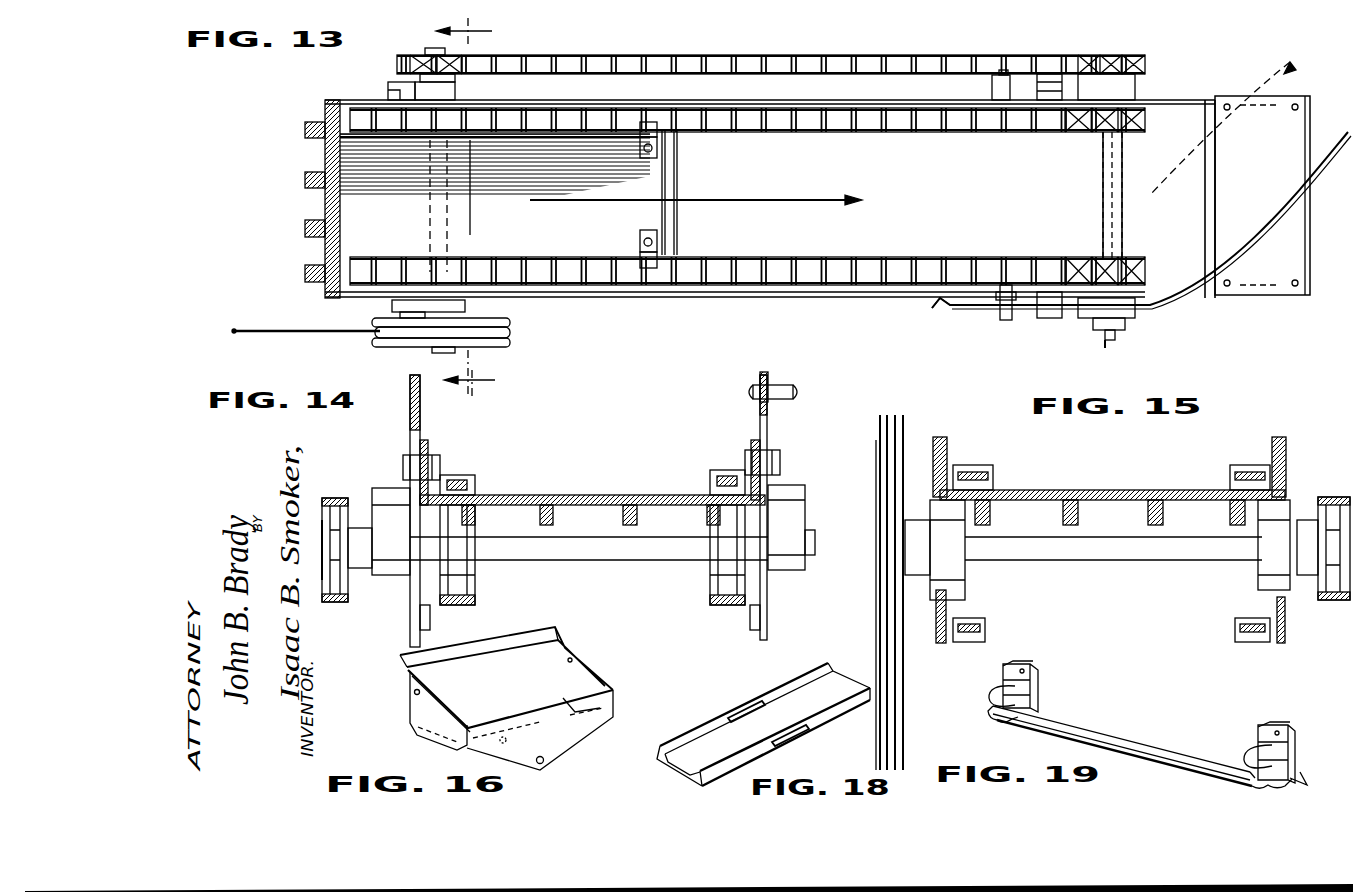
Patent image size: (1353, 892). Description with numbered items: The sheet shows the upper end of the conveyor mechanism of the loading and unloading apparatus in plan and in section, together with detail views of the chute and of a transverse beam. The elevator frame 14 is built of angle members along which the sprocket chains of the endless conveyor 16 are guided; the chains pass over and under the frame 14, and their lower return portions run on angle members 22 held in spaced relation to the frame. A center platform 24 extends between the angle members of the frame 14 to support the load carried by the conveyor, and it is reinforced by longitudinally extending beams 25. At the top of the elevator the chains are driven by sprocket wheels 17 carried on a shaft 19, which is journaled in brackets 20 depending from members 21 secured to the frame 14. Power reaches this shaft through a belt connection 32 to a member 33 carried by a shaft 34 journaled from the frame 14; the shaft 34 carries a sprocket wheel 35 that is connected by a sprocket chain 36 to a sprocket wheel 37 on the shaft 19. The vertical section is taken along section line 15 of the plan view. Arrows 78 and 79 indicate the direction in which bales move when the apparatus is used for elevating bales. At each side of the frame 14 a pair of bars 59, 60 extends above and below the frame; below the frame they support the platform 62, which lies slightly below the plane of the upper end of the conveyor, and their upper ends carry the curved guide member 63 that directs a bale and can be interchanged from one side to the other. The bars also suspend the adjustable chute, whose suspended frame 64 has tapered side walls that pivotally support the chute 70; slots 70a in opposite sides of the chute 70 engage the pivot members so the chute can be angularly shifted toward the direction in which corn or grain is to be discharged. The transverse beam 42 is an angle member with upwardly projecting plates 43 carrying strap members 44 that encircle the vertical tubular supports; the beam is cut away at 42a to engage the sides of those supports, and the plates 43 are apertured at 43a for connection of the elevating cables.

In FIG. 13, the frame 14 is at (515, 101).
In FIG. 14, the frame 14 is at (430, 455).
In FIG. 15, the frame 14 is at (948, 458).
In FIG. 13, the section line 15 is at (481, 210).
In FIG. 14, the section line 15 is at (491, 389).
In FIG. 13, the endless conveyor 16 is at (912, 122).
In FIG. 14, the endless conveyor 16 is at (477, 478).
In FIG. 15, the endless conveyor 16 is at (993, 472).
In FIG. 13, the sprocket wheels 17 is at (1145, 128).
In FIG. 14, the sprocket wheels 17 is at (478, 582).
In FIG. 13, the shaft 19 is at (1145, 57).
In FIG. 14, the shaft 19 is at (598, 562).
In FIG. 14, the brackets 20 is at (387, 575).
In FIG. 13, the members 21 is at (1120, 80).
In FIG. 14, the members 21 is at (391, 483).
In FIG. 15, the angle members 22 is at (950, 612).
In FIG. 13, the center platform 24 is at (340, 158).
In FIG. 14, the center platform 24 is at (522, 497).
In FIG. 15, the center platform 24 is at (1090, 490).
In FIG. 13, the longitudinally extending beams 25 is at (304, 130).
In FIG. 14, the longitudinally extending beams 25 is at (476, 515).
In FIG. 15, the longitudinally extending beams 25 is at (1062, 515).
In FIG. 13, the belt connection 32 is at (302, 335).
In FIG. 14, the belt connection 32 is at (890, 612).
In FIG. 13, the member 33 is at (495, 344).
In FIG. 14, the member 33 is at (885, 470).
In FIG. 13, the shaft 34 is at (445, 305).
In FIG. 15, the shaft 34 is at (1078, 560).
In FIG. 15, the sprocket wheel 35 is at (1333, 508).
In FIG. 13, the sprocket chain 36 is at (396, 60).
In FIG. 14, the sprocket chain 36 is at (337, 497).
In FIG. 15, the sprocket chain 36 is at (1325, 600).
In FIG. 13, the sprocket wheel 37 is at (1100, 55).
In FIG. 14, the sprocket wheel 37 is at (335, 605).
In FIG. 19, the transverse beam 42 is at (1120, 737).
In FIG. 19, the cut-away portion 42a is at (1015, 728).
In FIG. 19, the vertically extending plates 43 is at (1040, 703).
In FIG. 19, the apertures 43a is at (1030, 666).
In FIG. 19, the strap members 44 is at (992, 703).
In FIG. 13, the bar 59 is at (985, 312).
In FIG. 14, the bar 59 is at (410, 415).
In FIG. 13, the bar 60 is at (1010, 320).
In FIG. 13, the platform 62 is at (1285, 142).
In FIG. 13, the guide member 63 is at (1252, 260).
In FIG. 14, the guide member 63 is at (775, 385).
In FIG. 16, the suspended frame 64 is at (542, 681).
In FIG. 18, the chute 70 is at (712, 722).
In FIG. 18, the slots 70a is at (748, 705).
In FIG. 13, the arrow 78 is at (696, 195).
In FIG. 13, the arrow 79 is at (1223, 106).